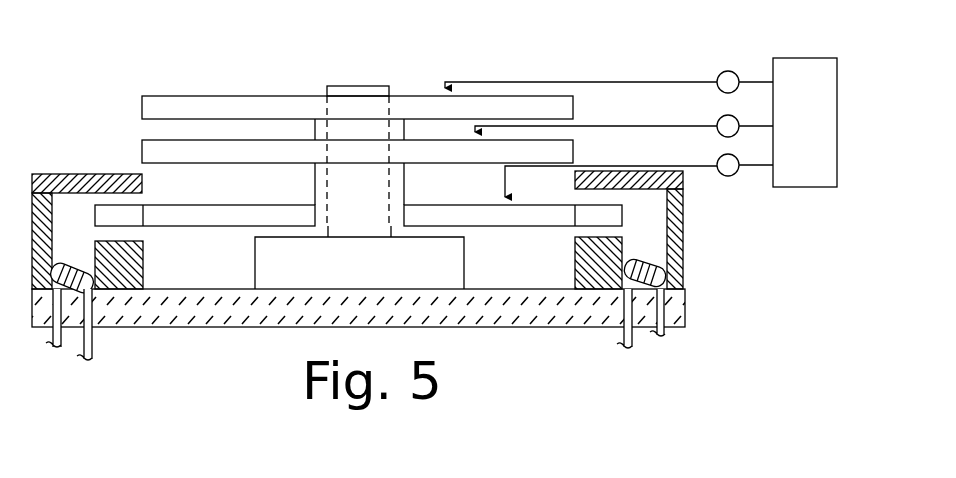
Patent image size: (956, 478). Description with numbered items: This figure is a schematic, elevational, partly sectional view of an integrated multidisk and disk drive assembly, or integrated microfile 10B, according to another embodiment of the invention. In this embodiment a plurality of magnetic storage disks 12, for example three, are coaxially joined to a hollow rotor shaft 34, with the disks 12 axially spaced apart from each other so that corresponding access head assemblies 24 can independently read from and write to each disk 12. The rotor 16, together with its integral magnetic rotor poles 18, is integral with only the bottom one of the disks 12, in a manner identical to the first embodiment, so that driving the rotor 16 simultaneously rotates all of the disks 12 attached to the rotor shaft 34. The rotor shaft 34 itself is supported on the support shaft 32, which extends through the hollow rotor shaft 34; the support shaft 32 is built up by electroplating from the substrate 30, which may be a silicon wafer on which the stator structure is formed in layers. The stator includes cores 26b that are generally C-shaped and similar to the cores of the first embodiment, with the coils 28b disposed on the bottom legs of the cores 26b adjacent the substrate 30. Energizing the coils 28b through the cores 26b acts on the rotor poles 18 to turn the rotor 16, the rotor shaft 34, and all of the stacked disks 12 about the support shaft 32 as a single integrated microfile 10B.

The integrated microfile 10B is at (91, 130).
The magnetic storage disk 12 is at (197, 205).
The rotor 16 is at (145, 228).
The magnetic rotor poles 18 is at (586, 214).
The access head assemblies 24 is at (695, 165).
The cores 26b is at (683, 231).
The coils 28b is at (642, 332).
The substrate 30 is at (201, 318).
The support shaft 32 is at (352, 86).
The hollow rotor shaft 34 is at (315, 182).